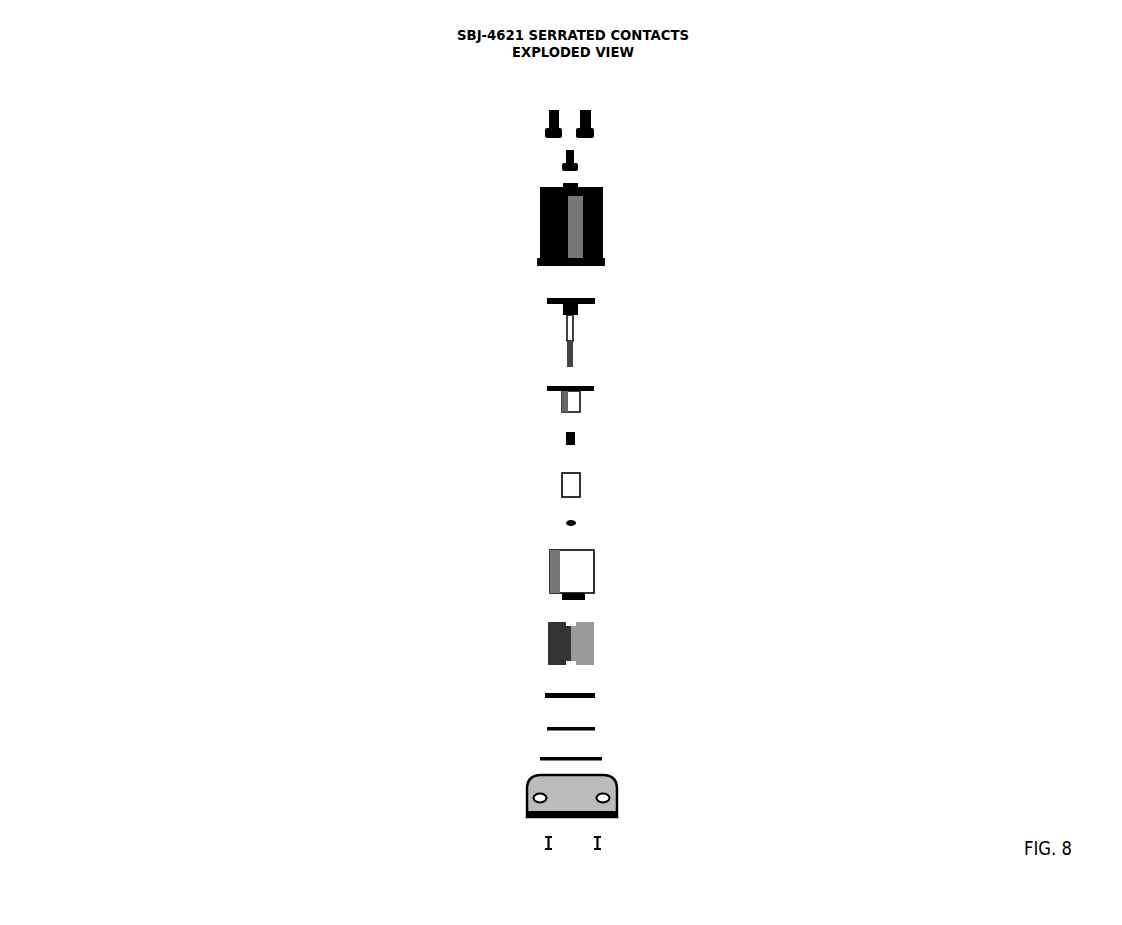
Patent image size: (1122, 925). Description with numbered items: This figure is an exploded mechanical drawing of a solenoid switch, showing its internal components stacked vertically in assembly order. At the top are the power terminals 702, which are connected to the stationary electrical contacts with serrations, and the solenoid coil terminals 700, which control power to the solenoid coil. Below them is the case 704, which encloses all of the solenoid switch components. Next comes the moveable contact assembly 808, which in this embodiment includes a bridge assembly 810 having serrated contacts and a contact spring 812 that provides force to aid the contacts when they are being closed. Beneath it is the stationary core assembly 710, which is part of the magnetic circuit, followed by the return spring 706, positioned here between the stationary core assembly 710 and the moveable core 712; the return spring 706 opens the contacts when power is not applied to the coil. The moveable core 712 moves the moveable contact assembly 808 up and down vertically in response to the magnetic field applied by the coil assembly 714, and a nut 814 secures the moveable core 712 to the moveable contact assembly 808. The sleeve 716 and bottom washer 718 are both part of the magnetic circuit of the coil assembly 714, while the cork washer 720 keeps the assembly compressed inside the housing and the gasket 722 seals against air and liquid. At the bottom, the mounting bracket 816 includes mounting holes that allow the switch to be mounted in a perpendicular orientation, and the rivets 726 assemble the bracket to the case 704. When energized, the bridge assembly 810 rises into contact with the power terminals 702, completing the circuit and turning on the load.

The solenoid coil terminals 700 is at (425, 145).
The power terminals 702 is at (714, 112).
The case 704 is at (676, 219).
The return spring 706 is at (712, 429).
The stationary core assembly 710 is at (450, 399).
The moveable core 712 is at (461, 477).
The coil assembly 714 is at (462, 567).
The sleeve 716 is at (689, 634).
The bottom washer 718 is at (463, 676).
The cork washer 720 is at (689, 705).
The gasket 722 is at (471, 743).
The rivets 726 is at (480, 833).
The moveable contact assembly 808 is at (412, 318).
The bridge assembly 810 is at (704, 279).
The contact spring 812 is at (724, 345).
The nut 814 is at (712, 508).
The mounting bracket 816 is at (699, 792).